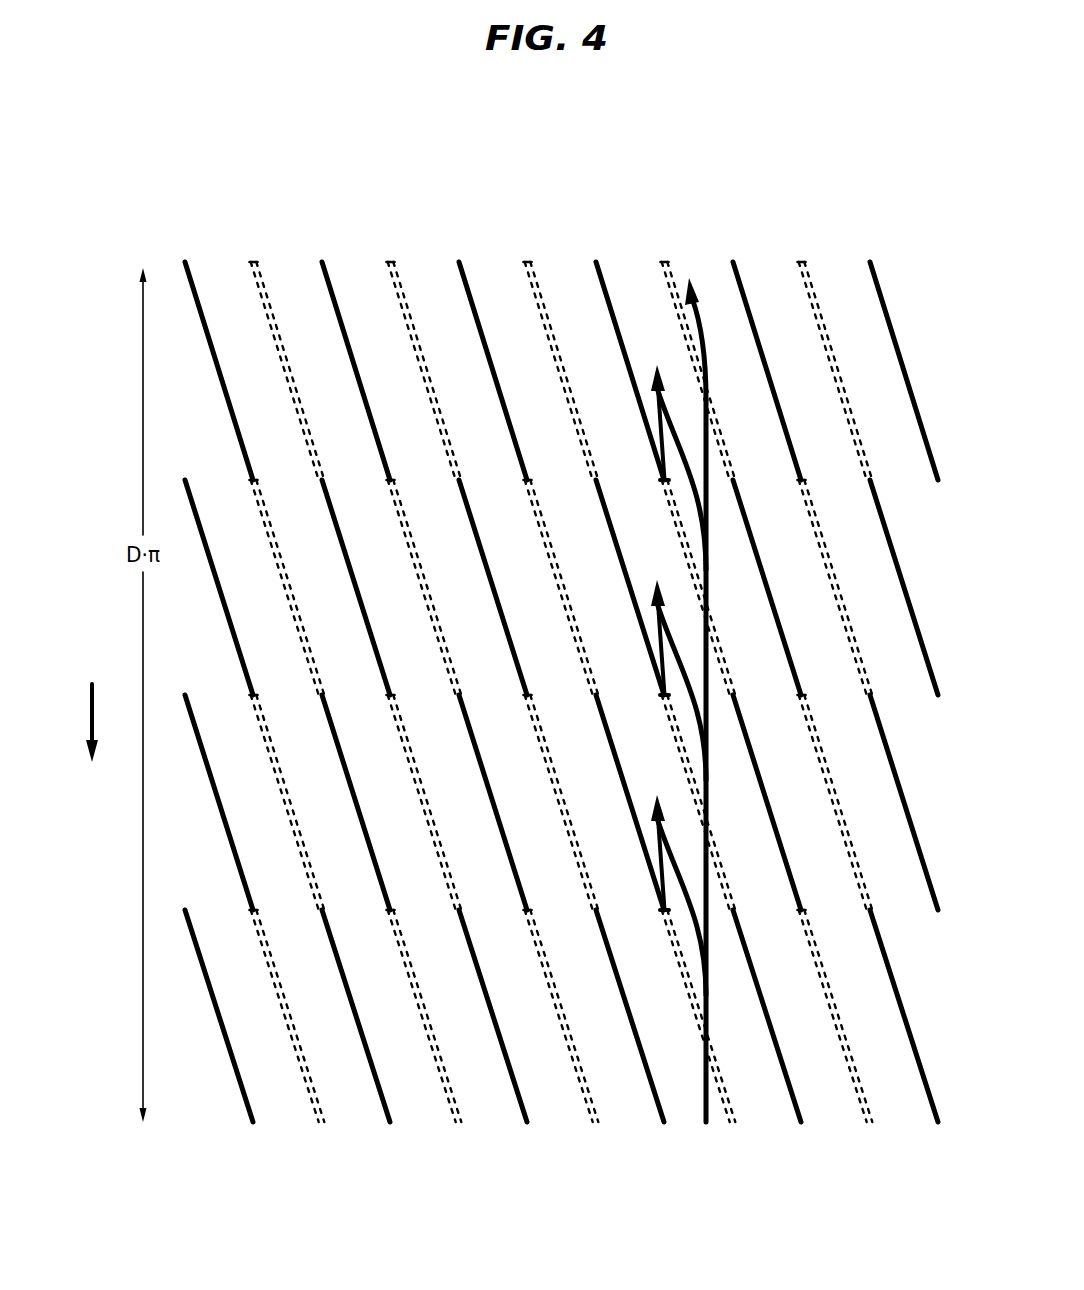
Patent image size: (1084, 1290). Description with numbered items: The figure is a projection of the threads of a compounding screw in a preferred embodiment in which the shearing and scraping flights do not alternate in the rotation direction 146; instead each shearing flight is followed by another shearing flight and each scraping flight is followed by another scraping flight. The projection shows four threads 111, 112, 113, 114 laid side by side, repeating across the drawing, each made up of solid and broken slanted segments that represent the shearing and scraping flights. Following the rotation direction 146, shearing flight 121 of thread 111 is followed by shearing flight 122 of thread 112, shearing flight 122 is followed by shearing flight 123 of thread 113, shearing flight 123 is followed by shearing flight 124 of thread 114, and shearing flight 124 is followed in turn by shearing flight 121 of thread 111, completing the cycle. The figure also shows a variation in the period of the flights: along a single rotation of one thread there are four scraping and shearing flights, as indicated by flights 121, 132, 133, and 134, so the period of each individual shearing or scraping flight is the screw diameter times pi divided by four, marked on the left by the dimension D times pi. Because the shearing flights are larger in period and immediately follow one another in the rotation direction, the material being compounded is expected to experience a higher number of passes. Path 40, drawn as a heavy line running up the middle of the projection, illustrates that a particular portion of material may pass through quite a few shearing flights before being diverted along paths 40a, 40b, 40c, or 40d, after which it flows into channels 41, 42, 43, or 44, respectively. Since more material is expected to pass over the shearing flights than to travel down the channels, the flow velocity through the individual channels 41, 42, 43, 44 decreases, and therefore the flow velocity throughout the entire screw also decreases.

The thread 111 is at (185, 238).
The thread 112 is at (253, 238).
The thread 113 is at (322, 238).
The thread 114 is at (390, 238).
The shearing flight 121 is at (411, 976).
The shearing flight 122 is at (414, 774).
The shearing flight 123 is at (416, 560).
The shearing flight 124 is at (421, 357).
The scraping flight 132 is at (342, 762).
The scraping flight 133 is at (282, 572).
The scraping flight 134 is at (217, 360).
The path 40 is at (704, 1105).
The path 40a is at (661, 830).
The path 40b is at (661, 612).
The path 40c is at (667, 415).
The path 40d is at (694, 313).
The channel 41 is at (762, 1117).
The channel 42 is at (828, 1117).
The channel 43 is at (905, 1117).
The channel 44 is at (852, 742).
The rotation direction 146 is at (90, 703).